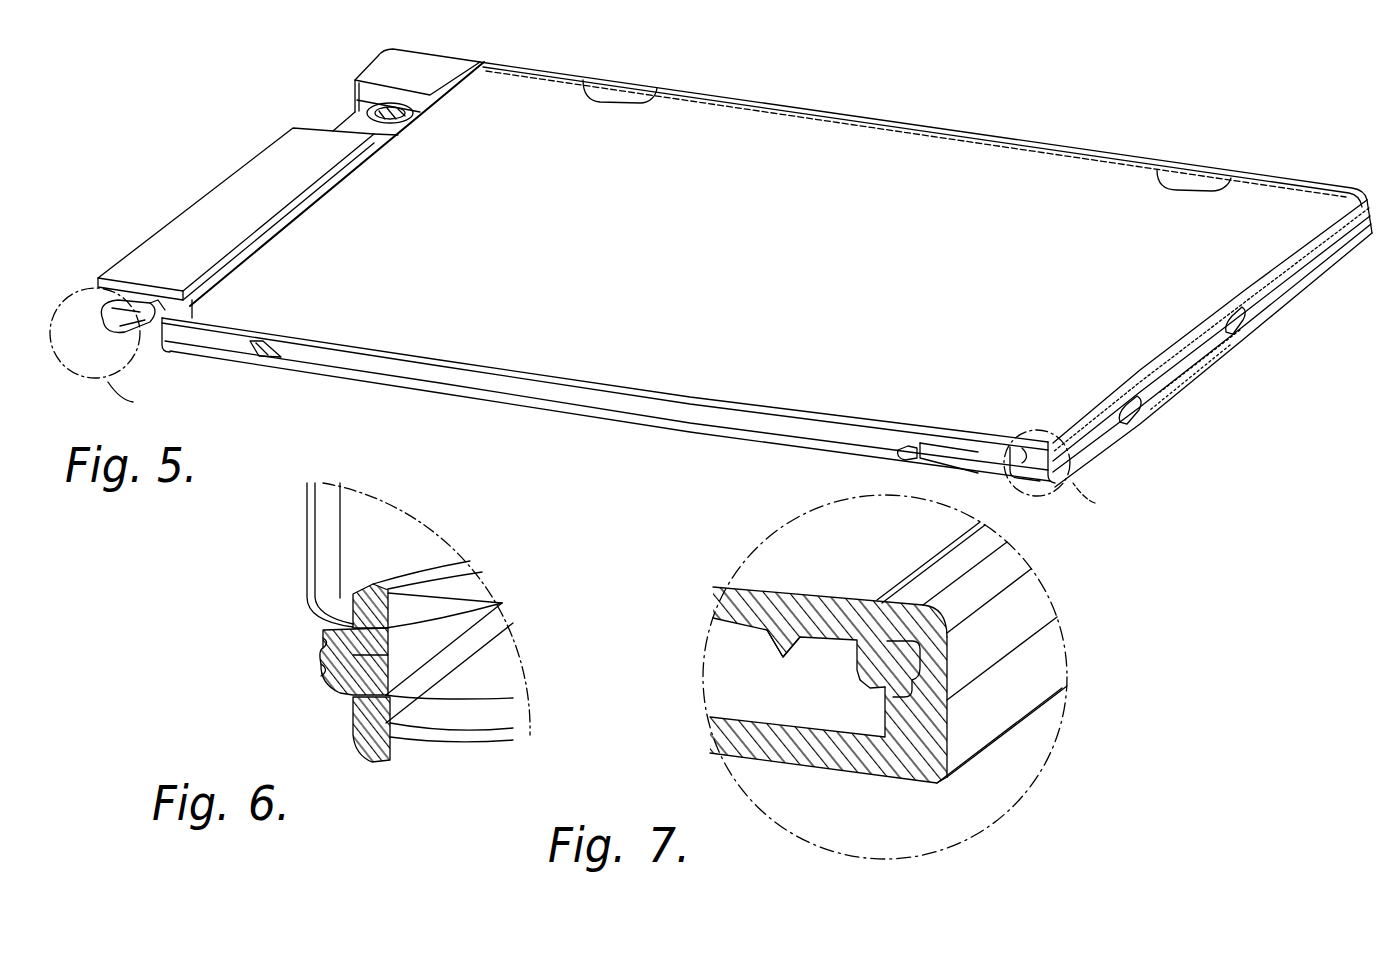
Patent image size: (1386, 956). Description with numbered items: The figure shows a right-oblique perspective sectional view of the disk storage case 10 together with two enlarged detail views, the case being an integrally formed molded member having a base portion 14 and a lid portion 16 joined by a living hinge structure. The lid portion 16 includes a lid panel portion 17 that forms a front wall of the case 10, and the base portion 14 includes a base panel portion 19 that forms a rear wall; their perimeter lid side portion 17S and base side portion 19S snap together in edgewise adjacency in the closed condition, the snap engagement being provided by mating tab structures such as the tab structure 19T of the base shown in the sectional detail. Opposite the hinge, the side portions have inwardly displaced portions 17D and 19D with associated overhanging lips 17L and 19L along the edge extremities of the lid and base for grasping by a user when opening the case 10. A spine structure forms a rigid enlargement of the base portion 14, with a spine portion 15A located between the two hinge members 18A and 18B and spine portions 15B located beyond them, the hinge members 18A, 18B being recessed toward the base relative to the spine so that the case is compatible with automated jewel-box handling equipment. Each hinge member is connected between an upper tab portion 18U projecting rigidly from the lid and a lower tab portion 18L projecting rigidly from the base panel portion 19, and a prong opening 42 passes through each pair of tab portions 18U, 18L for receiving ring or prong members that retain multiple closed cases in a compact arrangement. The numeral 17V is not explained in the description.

In FIG. 5, the storage case 10 is at (328, 404).
In FIG. 5, the base portion 14 is at (1050, 483).
In FIG. 7, the base portion 14 is at (930, 783).
In FIG. 5, the spine portion 15A is at (243, 163).
In FIG. 6, the spine portion 15A is at (307, 578).
In FIG. 5, the spine portion 15B is at (366, 72).
In FIG. 5, the lid portion 16 is at (827, 112).
In FIG. 7, the lid portion 16 is at (970, 583).
In FIG. 5, the lid panel portion 17 is at (762, 281).
In FIG. 7, the lid panel portion 17 is at (852, 556).
In FIG. 5, the inwardly displaced portion 17D is at (1220, 353).
In FIG. 5, the overhanging lip 17L is at (1143, 410).
In FIG. 7, the lid side portion 17S is at (1032, 626).
In FIG. 7, the V-notch of tray plate 17V is at (785, 668).
In FIG. 5, the hinge member 18A is at (349, 126).
In FIG. 6, the hinge member 18B is at (323, 678).
In FIG. 6, the upper tab portion 18U is at (453, 550).
In FIG. 6, the lower tab portion 18L is at (527, 684).
In FIG. 7, the base panel portion 19 is at (797, 708).
In FIG. 5, the inwardly displaced portion 19D is at (1222, 330).
In FIG. 5, the overhanging lip 19L is at (1185, 383).
In FIG. 7, the base side portion 19S is at (1037, 696).
In FIG. 7, the tab structure 19T is at (898, 638).
In FIG. 6, the prong opening 42 is at (416, 605).